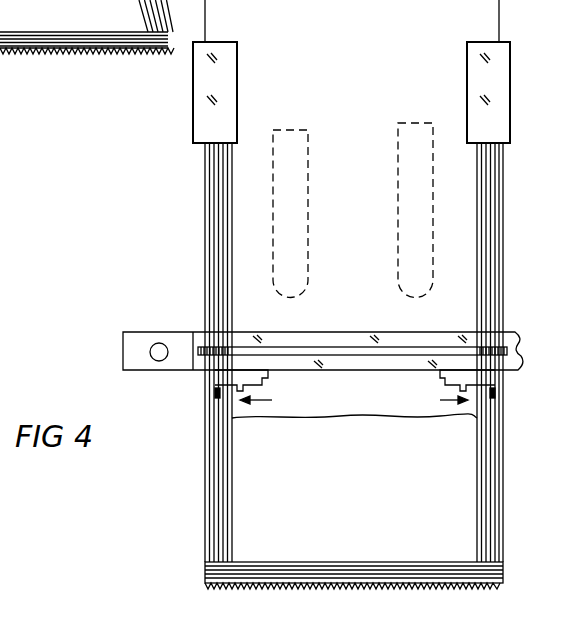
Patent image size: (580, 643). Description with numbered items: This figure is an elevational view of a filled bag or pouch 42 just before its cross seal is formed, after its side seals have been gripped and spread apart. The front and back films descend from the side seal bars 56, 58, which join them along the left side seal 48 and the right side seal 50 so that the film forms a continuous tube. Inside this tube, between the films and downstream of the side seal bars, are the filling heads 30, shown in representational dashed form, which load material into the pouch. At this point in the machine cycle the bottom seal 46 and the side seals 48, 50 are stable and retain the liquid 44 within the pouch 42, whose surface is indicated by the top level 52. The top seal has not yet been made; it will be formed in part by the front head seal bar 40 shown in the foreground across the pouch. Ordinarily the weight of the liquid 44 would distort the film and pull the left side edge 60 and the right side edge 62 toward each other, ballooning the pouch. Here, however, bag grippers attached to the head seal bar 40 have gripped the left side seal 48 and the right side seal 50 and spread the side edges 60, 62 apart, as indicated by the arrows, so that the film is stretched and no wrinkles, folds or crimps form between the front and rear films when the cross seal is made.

The filling heads 30 is at (400, 205).
The front head seal bar 40 is at (512, 335).
The pouch 42 is at (532, 405).
The liquid 44 is at (361, 505).
The bottom seal 46 is at (365, 590).
The left side seal 48 is at (205, 497).
The right side seal 50 is at (493, 466).
The top level 52 is at (367, 417).
The side seal bar 56 is at (237, 90).
The side seal bar 58 is at (478, 80).
The left side edge 60 is at (205, 403).
The right side edge 62 is at (503, 550).